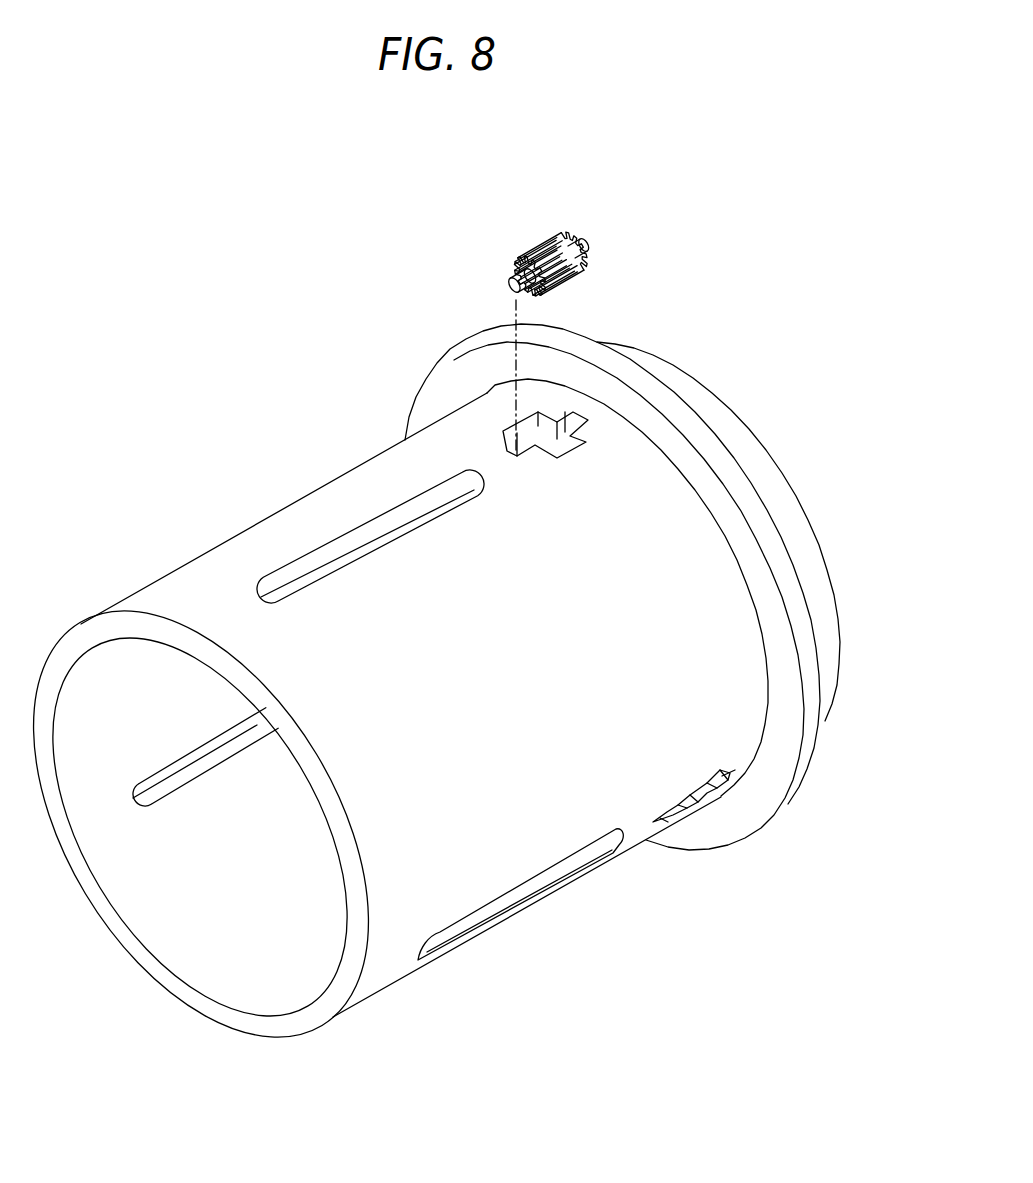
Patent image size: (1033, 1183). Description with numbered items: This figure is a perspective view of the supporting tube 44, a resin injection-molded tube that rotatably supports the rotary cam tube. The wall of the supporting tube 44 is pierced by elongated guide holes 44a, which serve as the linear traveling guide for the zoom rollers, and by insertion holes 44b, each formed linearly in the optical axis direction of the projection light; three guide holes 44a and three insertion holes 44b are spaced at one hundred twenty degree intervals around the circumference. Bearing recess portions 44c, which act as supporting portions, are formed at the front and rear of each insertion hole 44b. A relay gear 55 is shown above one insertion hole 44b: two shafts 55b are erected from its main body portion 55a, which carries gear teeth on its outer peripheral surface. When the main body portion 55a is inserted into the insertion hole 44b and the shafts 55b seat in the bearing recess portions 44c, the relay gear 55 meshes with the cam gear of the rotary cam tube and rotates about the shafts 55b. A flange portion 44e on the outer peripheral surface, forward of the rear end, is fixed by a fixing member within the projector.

The supporting tube 44 is at (244, 504).
The guide hole 44a is at (378, 538).
The insertion hole 44b is at (514, 410).
The bearing recess portion 44c is at (506, 446).
The flange portion 44e is at (787, 797).
The relay gear 55 is at (534, 223).
The main body portion 55a is at (538, 243).
The shaft 55b is at (548, 234).